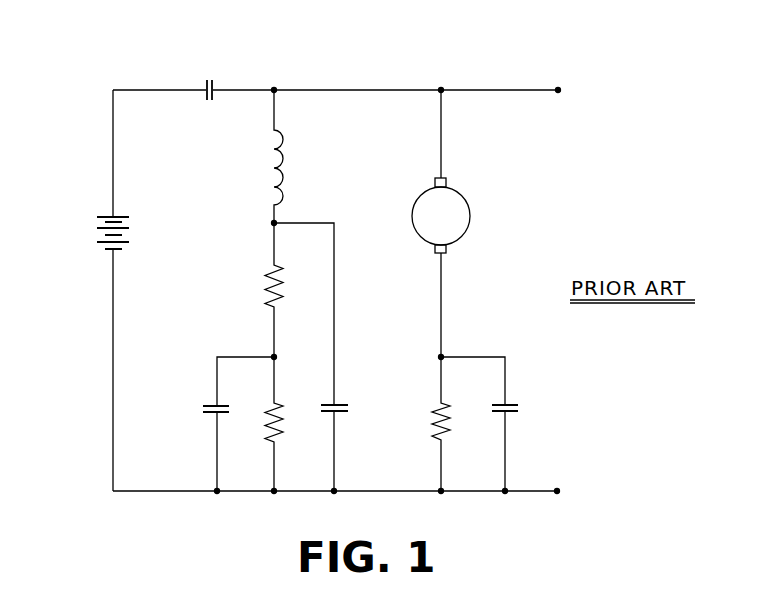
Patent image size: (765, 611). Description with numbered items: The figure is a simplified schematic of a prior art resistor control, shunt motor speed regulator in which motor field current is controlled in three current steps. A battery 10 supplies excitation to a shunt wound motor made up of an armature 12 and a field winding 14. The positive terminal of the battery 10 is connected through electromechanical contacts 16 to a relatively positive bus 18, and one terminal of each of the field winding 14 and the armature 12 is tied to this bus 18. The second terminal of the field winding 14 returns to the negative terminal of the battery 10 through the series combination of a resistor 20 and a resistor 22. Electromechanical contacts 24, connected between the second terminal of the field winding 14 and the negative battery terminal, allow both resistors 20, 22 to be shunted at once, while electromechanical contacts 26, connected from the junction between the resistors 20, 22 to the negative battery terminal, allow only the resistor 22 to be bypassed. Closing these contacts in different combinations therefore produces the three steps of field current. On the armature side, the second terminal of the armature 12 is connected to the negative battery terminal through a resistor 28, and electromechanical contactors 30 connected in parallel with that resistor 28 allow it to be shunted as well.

The battery 10 is at (90, 229).
The armature 12 is at (469, 201).
The field winding 14 is at (290, 172).
The electromechanical contacts 16 is at (216, 79).
The relatively positive bus 18 is at (382, 89).
The resistor 20 is at (265, 286).
The resistor 22 is at (285, 426).
The electromechanical contacts 24 is at (351, 410).
The electromechanical contacts 26 is at (198, 408).
The resistor 28 is at (431, 426).
The electromechanical contactors 30 is at (522, 410).